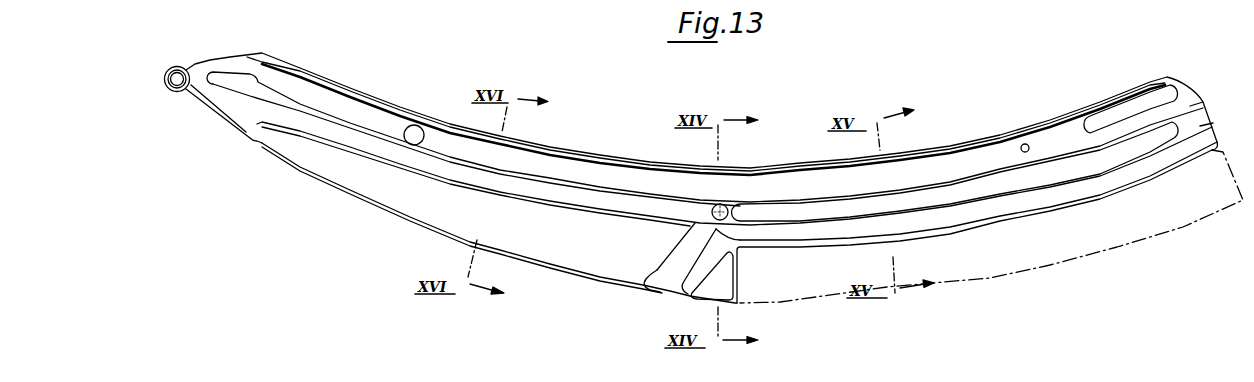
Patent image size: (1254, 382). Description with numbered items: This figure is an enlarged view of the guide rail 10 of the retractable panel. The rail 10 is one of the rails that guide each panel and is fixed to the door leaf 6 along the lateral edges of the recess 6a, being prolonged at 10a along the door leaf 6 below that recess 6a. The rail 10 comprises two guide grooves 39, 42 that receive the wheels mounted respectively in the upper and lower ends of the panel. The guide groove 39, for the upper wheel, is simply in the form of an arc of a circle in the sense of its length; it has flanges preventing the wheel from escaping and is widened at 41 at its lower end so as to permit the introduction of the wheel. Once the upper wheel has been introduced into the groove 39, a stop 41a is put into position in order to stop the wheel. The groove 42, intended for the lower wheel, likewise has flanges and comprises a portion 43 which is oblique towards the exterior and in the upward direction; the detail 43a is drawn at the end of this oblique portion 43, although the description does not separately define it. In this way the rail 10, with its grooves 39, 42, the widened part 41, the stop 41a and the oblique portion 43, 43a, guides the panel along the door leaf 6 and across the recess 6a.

The door leaf 6 is at (1133, 227).
The recess 6a is at (423, 200).
The rail 10 is at (597, 155).
The prolongation of the rail 10a is at (1063, 167).
The guide groove 39 is at (375, 153).
The widened portion of the groove 41 is at (721, 204).
The stop 41a is at (733, 211).
The guide groove 42 is at (971, 210).
The oblique portion 43 is at (697, 262).
The tab of connecting web 43a is at (653, 289).